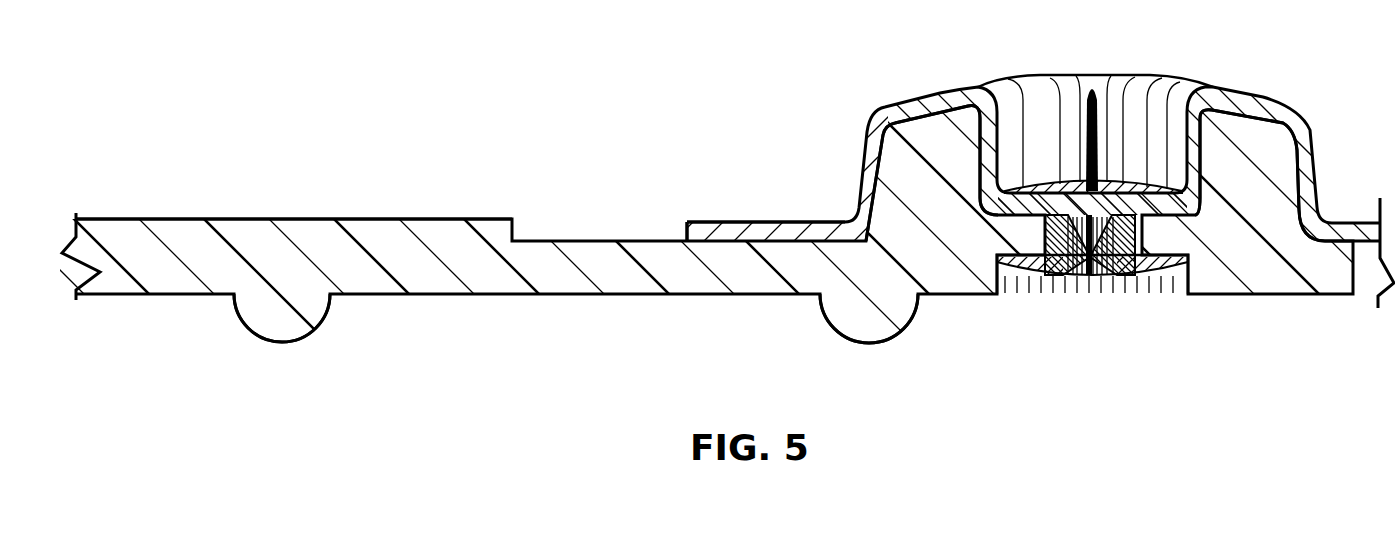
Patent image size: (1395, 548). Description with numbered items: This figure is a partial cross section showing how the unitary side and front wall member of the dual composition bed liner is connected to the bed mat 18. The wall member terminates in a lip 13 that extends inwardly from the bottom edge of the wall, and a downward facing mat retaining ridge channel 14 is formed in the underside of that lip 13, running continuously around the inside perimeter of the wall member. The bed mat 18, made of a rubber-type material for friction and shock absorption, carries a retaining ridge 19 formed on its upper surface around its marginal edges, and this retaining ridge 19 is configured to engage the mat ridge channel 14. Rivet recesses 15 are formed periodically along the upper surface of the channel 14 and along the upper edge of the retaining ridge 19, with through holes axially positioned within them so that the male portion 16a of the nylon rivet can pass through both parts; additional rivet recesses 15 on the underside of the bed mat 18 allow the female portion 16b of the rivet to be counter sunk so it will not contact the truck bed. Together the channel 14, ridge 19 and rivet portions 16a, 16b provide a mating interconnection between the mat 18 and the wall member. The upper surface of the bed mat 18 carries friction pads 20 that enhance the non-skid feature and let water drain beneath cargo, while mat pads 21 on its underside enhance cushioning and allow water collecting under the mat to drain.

The lip 13 is at (757, 222).
The mat retaining ridge channel 14 is at (952, 98).
The rivet recesses 15 is at (1050, 67).
The male portion of nylon rivet 16a is at (1143, 184).
The female portion of nylon rivet 16b is at (1146, 272).
The bed mat 18 is at (577, 283).
The retaining ridge 19 is at (908, 138).
The friction pads 20 is at (240, 220).
The mat pads 21 is at (283, 342).